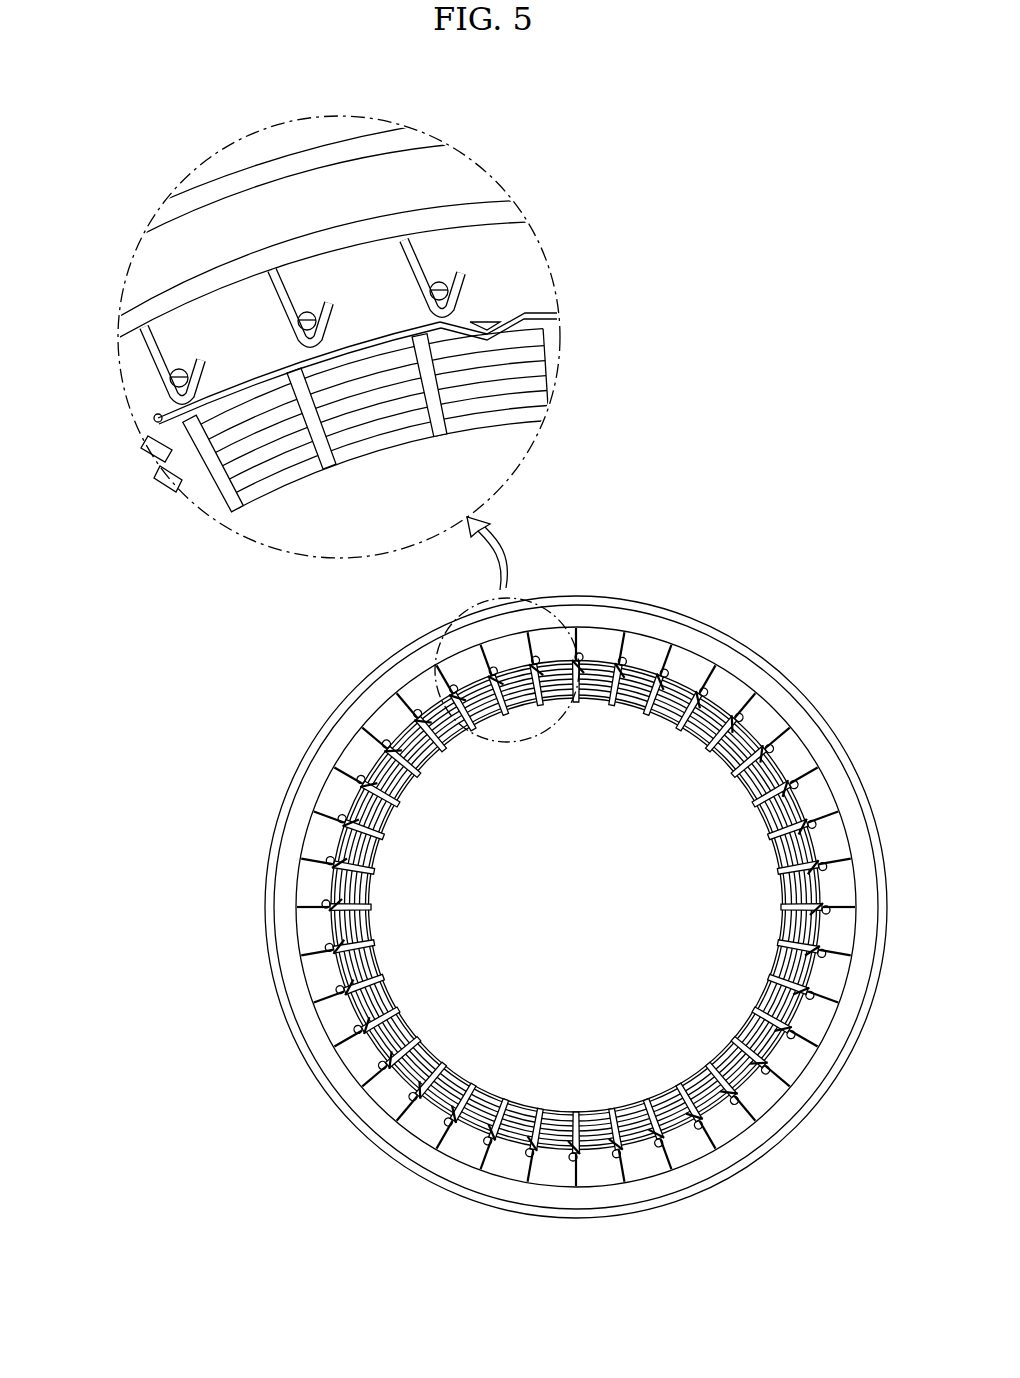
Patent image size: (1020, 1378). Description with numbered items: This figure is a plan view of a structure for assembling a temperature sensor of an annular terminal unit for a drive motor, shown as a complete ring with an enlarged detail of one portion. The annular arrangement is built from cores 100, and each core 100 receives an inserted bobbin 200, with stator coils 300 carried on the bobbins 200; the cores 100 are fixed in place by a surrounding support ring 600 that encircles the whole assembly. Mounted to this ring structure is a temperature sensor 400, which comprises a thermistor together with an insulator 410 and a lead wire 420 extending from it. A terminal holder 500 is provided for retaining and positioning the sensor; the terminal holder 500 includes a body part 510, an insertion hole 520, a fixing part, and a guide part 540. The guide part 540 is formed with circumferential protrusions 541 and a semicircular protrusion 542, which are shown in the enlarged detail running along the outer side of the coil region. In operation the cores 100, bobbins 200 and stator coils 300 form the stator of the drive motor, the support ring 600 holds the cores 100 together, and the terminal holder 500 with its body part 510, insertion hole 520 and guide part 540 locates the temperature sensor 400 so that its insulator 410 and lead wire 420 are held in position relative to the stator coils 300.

The core 100 is at (490, 428).
The bobbin 200 is at (522, 420).
The stator coil 300 is at (530, 381).
The temperature sensor 400 is at (493, 794).
The insulator 410 is at (183, 425).
The lead wire 420 is at (165, 468).
The terminal holder 500 is at (513, 766).
The body part 510 is at (520, 262).
The insertion hole 520 is at (155, 418).
The guide part 540 is at (357, 476).
The circumferential protrusion 541 is at (293, 374).
The semicircular protrusion 542 is at (487, 324).
The support ring 600 is at (455, 170).